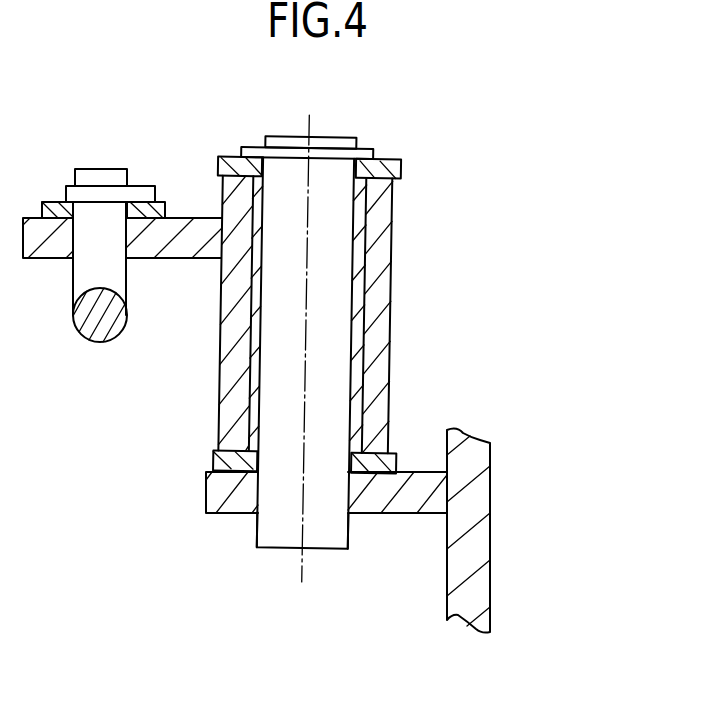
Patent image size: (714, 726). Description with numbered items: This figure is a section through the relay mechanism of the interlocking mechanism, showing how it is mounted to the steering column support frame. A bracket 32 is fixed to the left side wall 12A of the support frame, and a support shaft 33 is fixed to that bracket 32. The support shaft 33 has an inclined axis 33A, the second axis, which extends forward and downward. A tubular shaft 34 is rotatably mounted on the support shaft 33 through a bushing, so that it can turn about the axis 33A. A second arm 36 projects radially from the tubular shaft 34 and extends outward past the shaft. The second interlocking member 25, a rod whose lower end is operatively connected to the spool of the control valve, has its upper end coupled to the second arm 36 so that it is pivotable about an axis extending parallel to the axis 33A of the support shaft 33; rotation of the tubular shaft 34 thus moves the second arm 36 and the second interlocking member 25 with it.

The side wall 12A is at (475, 508).
The second interlocking member 25 is at (103, 328).
The bracket 32 is at (387, 498).
The support shaft 33 is at (330, 283).
The inclined axis 33A is at (302, 569).
The tubular shaft 34 is at (380, 222).
The second arm 36 is at (190, 227).